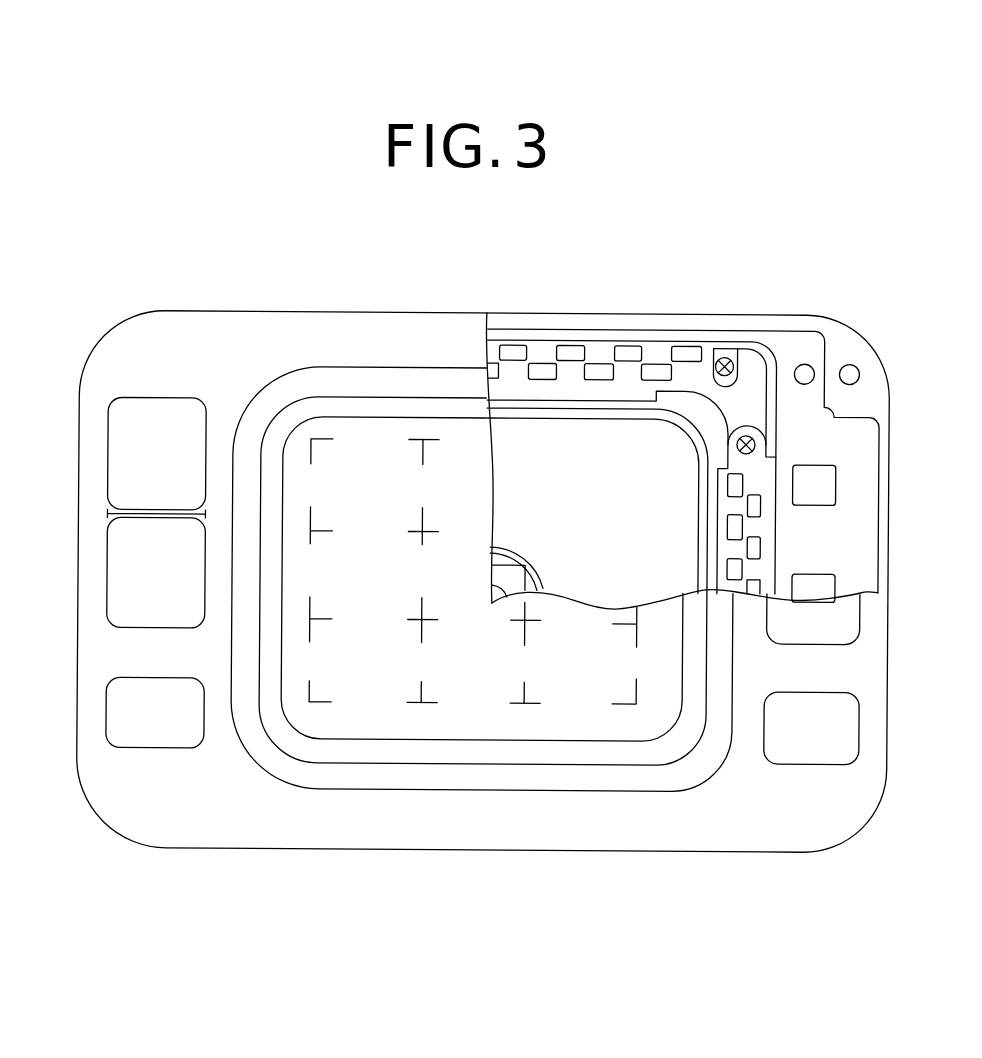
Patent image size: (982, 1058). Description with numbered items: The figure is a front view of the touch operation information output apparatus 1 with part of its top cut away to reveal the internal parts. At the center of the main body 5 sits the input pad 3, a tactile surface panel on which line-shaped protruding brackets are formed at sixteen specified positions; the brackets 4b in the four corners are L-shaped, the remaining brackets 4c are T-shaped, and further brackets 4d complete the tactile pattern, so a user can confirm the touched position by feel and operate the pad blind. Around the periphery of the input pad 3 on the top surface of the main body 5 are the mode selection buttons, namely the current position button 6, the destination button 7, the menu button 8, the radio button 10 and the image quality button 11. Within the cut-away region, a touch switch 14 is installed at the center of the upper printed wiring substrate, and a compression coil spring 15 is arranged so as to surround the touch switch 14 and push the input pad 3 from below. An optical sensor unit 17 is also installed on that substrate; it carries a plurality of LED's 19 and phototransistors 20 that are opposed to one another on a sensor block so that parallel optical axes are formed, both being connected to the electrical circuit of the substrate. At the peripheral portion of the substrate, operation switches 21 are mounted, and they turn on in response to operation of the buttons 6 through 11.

The touch operation information output apparatus 1 is at (771, 317).
The input pad 3 is at (382, 447).
The protruding brackets 4b is at (625, 715).
The protruding brackets 4c is at (520, 720).
The touch switch area 4d is at (417, 627).
The main body 5 is at (307, 313).
The current position button 6 is at (107, 447).
The destination button 7 is at (107, 580).
The menu button 8 is at (107, 722).
The radio button 10 is at (862, 622).
The image quality button 11 is at (860, 722).
The touch switch 14 is at (507, 546).
The compression coil spring 15 is at (547, 579).
The optical sensor unit 17 is at (598, 345).
The LED's 19 is at (537, 380).
The phototransistors 20 is at (511, 345).
The operation switches 21 is at (835, 581).